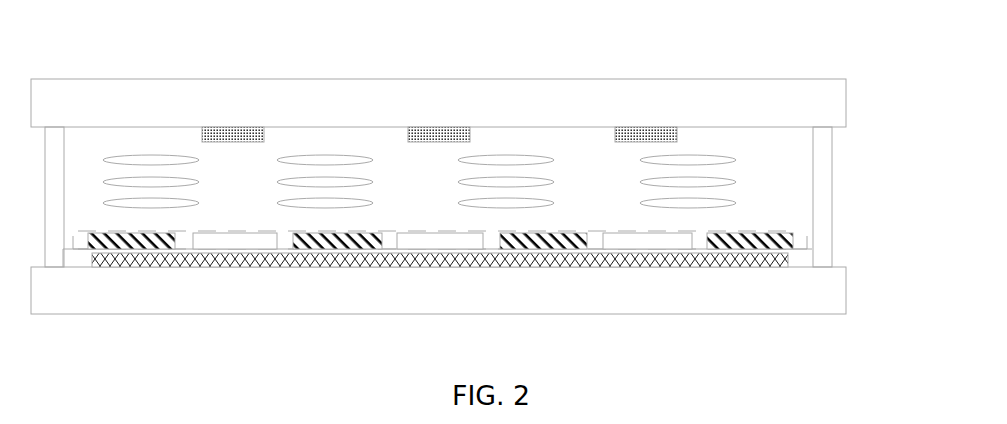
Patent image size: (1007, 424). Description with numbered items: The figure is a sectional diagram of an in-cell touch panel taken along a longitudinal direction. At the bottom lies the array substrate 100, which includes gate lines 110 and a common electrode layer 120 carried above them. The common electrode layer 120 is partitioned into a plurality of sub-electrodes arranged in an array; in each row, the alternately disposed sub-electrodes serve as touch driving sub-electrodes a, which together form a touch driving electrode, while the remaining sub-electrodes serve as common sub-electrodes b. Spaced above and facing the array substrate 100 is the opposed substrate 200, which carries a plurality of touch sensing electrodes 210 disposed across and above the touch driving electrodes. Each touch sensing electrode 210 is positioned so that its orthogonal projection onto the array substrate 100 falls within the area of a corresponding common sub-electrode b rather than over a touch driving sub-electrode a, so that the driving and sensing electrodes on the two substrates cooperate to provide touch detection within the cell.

The array substrate 100 is at (846, 278).
The gate lines 110 is at (362, 257).
The common electrode layer 120 is at (440, 287).
The opposed substrate 200 is at (846, 102).
The touch sensing electrodes 210 is at (240, 127).
The touch driving sub-electrodes a is at (160, 240).
The common sub-electrodes b is at (237, 238).